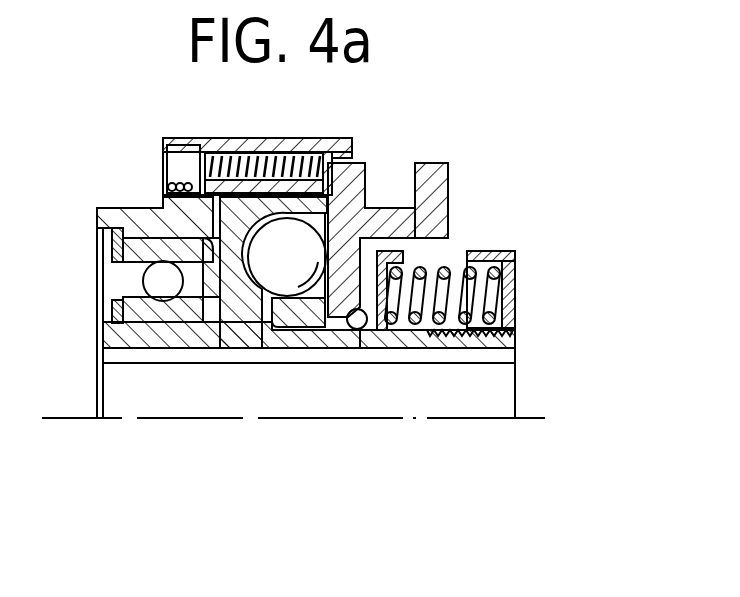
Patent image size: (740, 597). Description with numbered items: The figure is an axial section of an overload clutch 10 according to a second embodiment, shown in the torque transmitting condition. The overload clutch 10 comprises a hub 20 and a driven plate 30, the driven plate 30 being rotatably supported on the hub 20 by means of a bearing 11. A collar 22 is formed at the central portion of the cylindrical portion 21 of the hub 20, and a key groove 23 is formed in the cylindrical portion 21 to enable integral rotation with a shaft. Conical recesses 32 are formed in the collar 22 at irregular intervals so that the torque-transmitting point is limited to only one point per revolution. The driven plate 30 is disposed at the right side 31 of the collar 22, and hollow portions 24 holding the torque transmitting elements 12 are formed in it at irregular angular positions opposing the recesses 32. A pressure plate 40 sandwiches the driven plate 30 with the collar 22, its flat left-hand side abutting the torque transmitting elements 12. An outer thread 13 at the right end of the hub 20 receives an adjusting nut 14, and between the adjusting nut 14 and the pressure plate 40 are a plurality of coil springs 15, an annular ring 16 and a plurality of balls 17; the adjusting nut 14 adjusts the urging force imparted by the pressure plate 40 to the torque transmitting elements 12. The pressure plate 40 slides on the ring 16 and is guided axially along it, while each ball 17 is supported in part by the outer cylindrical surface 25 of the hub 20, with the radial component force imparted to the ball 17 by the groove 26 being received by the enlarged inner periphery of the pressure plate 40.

The overload clutch 10 is at (457, 157).
The bearing 11 is at (120, 252).
The torque transmitting elements 12 is at (292, 237).
The outer thread 13 is at (517, 327).
The adjusting nut 14 is at (517, 273).
The coil springs 15 is at (468, 254).
The annular ring 16 is at (425, 250).
The balls 17 is at (352, 328).
The hub 20 is at (483, 366).
The cylindrical portion 21 is at (252, 330).
The collar 22 is at (232, 218).
The key groove 23 is at (400, 355).
The hollow portions 24 is at (368, 195).
The outer cylindrical surface 25 is at (318, 327).
The groove 26 is at (392, 346).
The driven plate 30 is at (258, 137).
The right side 31 is at (285, 302).
The conical recesses 32 is at (247, 285).
The pressure plate 40 is at (448, 190).